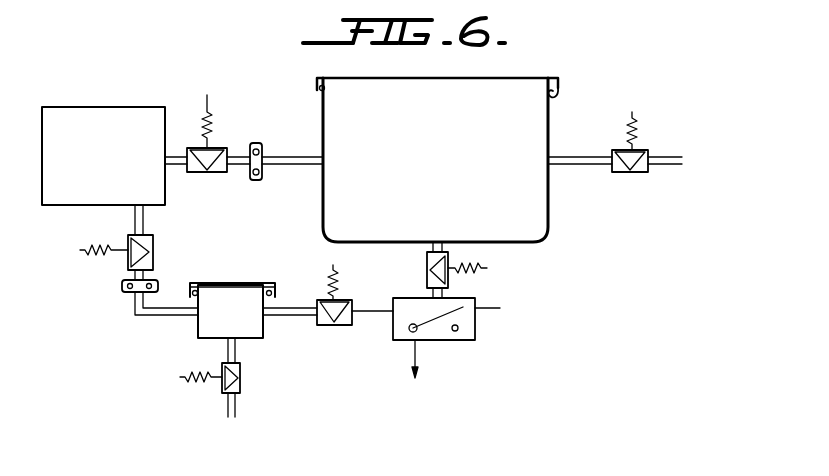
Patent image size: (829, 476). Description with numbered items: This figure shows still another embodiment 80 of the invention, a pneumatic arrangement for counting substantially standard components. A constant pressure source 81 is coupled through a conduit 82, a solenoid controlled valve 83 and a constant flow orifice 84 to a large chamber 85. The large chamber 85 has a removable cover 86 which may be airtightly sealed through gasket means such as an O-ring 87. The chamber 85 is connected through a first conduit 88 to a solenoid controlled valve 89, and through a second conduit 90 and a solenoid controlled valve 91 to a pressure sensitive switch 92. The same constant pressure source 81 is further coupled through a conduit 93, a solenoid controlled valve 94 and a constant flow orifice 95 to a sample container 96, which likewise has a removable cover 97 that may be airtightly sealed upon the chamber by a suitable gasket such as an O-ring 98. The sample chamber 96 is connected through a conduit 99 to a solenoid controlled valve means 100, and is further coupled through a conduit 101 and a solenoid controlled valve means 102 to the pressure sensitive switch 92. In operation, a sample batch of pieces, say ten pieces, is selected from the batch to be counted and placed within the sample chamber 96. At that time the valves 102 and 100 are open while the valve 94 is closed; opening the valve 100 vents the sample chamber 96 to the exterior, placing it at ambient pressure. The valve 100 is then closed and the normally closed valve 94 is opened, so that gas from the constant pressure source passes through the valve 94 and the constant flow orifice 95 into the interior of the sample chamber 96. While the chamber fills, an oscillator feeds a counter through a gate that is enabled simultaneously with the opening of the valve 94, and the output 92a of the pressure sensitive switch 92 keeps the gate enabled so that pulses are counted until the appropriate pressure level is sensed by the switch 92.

The embodiment 80 is at (221, 65).
The constant pressure source 81 is at (128, 86).
The conduit 82 is at (178, 150).
The solenoid controlled valve 83 is at (210, 122).
The constant flow orifice 84 is at (258, 145).
The large chamber 85 is at (447, 176).
The removable cover 86 is at (533, 75).
The O-ring 87 is at (563, 95).
The first conduit 88 is at (602, 132).
The solenoid controlled valve 89 is at (640, 130).
The second conduit 90 is at (430, 245).
The solenoid controlled valve 91 is at (470, 275).
The pressure sensitive switch 92 is at (458, 340).
The output 92a is at (413, 345).
The conduit 93 is at (147, 218).
The solenoid controlled valve 94 is at (110, 260).
The constant flow orifice 95 is at (123, 287).
The sample container 96 is at (197, 325).
The removable cover 97 is at (217, 283).
The O-ring 98 is at (193, 300).
The conduit 99 is at (235, 348).
The solenoid controlled valve means 100 is at (197, 383).
The conduit 101 is at (285, 317).
The solenoid controlled valve means 102 is at (340, 273).